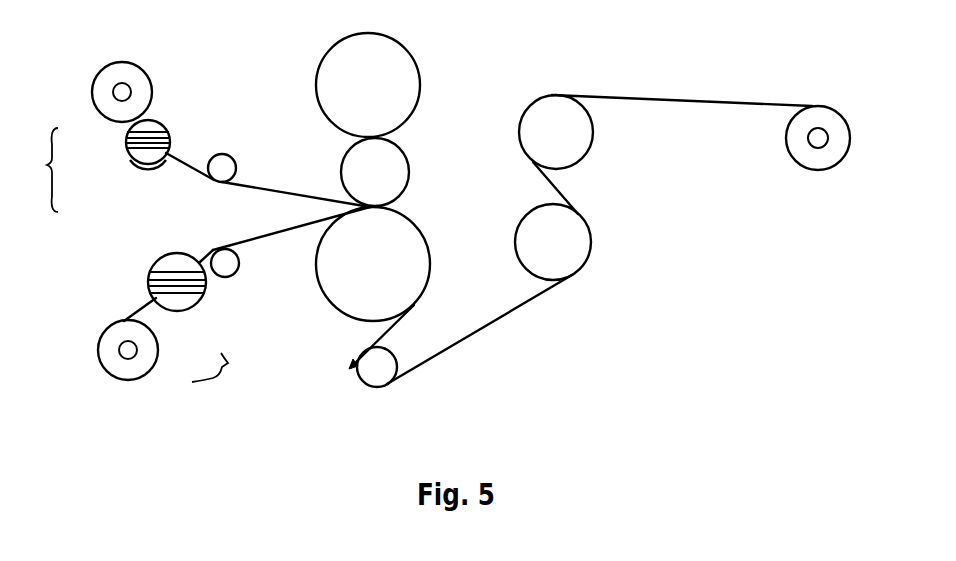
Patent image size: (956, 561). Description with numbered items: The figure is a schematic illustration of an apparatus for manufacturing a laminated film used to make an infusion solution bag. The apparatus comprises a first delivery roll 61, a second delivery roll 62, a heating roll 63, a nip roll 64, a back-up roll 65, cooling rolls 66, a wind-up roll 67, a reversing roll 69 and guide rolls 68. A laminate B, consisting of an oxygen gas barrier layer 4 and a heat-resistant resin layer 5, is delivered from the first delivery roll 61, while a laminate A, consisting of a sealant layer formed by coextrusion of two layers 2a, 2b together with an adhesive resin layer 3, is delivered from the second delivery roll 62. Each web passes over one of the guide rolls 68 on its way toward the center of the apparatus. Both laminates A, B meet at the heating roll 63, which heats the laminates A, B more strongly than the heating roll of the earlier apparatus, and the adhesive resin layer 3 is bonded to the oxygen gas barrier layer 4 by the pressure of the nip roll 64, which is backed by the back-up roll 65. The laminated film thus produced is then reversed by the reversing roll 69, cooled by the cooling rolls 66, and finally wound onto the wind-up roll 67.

The sealant layer 2a is at (128, 141).
The sealant layer 2b is at (130, 146).
The adhesive resin layer 3 is at (134, 156).
The oxygen gas barrier layer 4 is at (190, 295).
The heat-resistant resin layer 5 is at (172, 277).
The first delivery roll 61 is at (100, 345).
The second delivery roll 62 is at (108, 75).
The heating roll 63 is at (316, 278).
The nip roll 64 is at (405, 150).
The back-up roll 65 is at (316, 93).
The cooling rolls 66 is at (598, 120).
The wind-up roll 67 is at (853, 130).
The guide rolls 68 is at (218, 155).
The reversing roll 69 is at (383, 372).
The laminate A is at (198, 160).
The laminate B is at (142, 307).